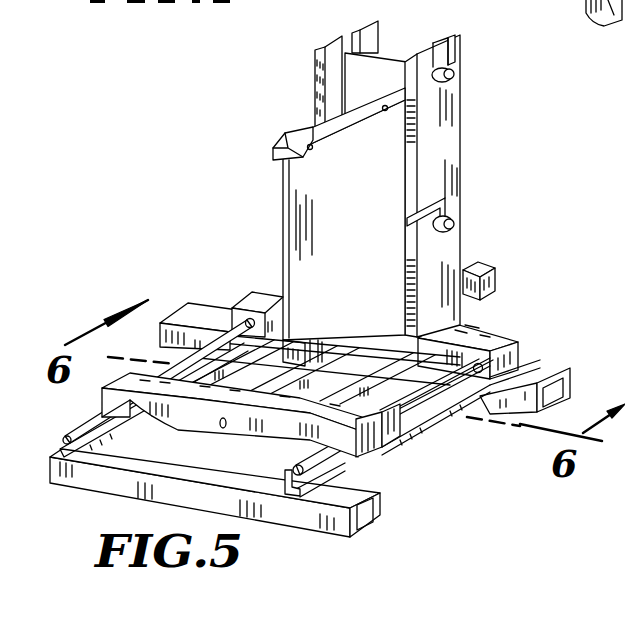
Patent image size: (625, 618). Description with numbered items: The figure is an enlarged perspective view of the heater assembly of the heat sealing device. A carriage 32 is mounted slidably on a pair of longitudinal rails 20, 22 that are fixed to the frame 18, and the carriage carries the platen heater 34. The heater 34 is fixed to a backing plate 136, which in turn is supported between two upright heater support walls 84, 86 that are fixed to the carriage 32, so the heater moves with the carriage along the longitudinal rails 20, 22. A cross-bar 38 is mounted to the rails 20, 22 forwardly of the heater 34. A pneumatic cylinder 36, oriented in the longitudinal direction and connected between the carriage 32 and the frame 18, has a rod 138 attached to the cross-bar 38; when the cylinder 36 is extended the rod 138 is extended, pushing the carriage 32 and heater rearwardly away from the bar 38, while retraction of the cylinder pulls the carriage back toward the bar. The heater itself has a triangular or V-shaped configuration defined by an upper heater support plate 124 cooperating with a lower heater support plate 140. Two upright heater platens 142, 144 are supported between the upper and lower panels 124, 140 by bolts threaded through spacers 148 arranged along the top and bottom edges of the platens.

The frame 18 is at (380, 495).
The longitudinal rail 20 is at (100, 414).
The longitudinal rail 22 is at (322, 458).
The carriage 32 is at (483, 338).
The heater 34 is at (302, 193).
The pneumatic cylinder 36 is at (472, 266).
The cross-bar 38 is at (207, 420).
The upright heater support wall 84 is at (330, 62).
The upright heater support wall 86 is at (455, 61).
The upper heater support plate 124 is at (313, 118).
The backing plate 136 is at (388, 74).
The rod 138 is at (322, 332).
The lower heater support plate 140 is at (375, 307).
The upright heater platen 142 is at (282, 240).
The upright heater platen 144 is at (387, 152).
The spacer 148 is at (307, 150).